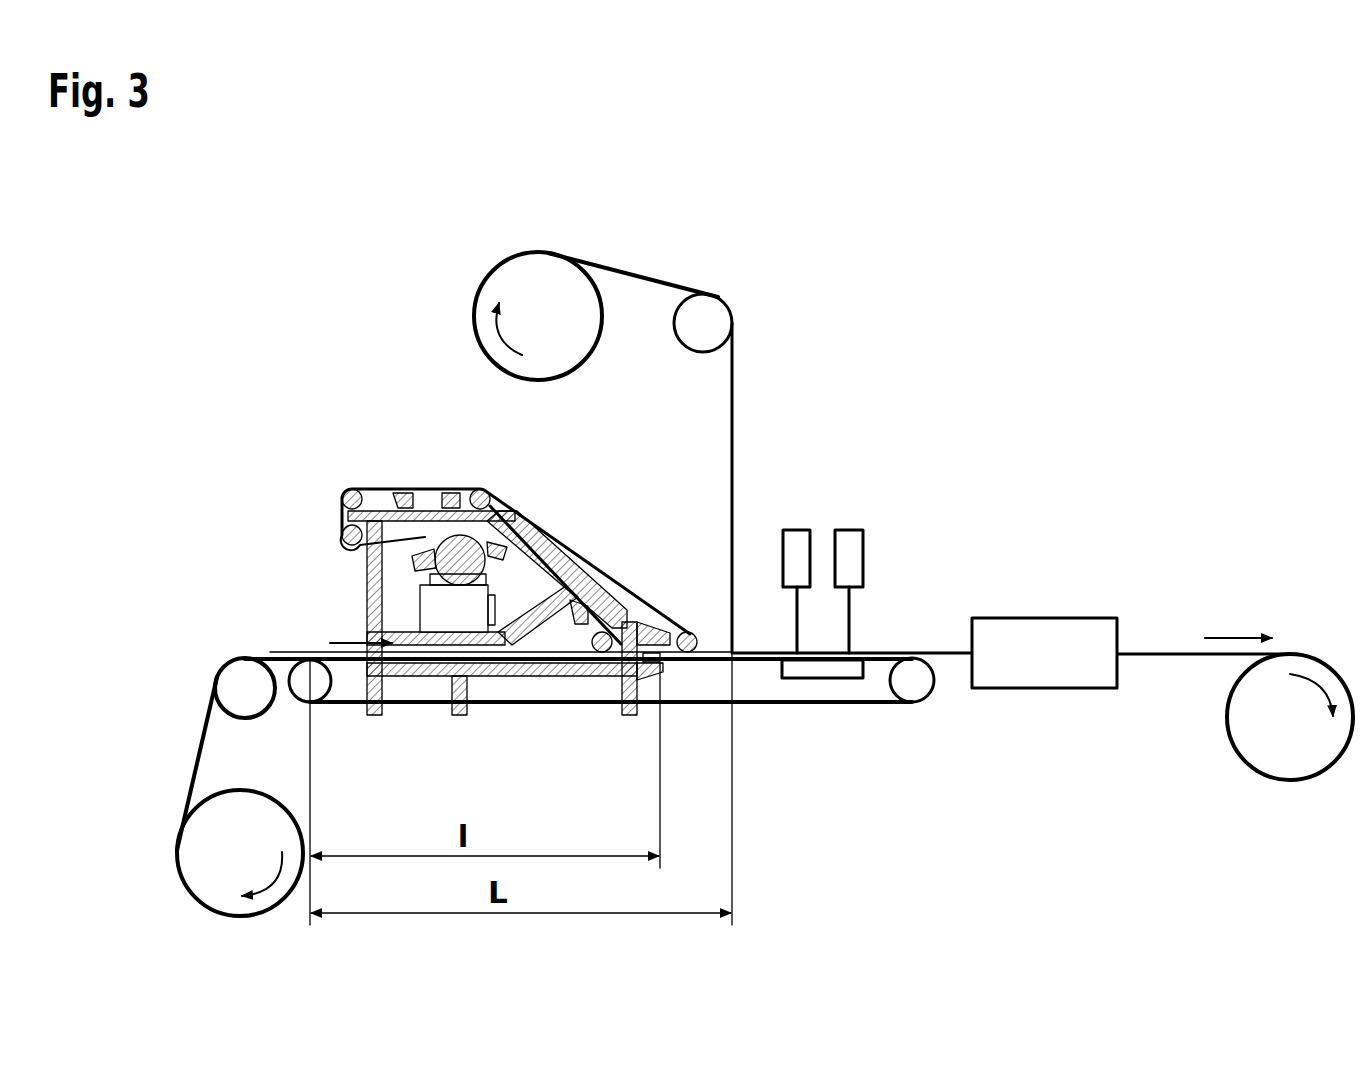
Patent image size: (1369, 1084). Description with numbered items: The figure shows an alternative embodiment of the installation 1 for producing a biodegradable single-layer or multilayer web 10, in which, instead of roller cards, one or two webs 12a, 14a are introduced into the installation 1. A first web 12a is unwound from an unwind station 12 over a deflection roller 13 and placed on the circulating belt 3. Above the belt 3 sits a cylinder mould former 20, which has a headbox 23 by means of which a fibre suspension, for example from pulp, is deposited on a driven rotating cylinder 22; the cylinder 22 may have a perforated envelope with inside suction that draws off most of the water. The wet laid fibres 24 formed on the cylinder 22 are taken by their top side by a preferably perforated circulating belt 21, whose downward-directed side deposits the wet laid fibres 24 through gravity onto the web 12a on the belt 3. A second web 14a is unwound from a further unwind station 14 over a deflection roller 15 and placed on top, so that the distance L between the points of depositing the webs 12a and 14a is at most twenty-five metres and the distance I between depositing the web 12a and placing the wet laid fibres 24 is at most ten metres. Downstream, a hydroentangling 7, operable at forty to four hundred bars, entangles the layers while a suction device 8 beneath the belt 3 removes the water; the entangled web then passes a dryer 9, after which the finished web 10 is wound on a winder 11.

The installation 1 is at (1060, 238).
The circulating belt 3 is at (497, 705).
The hydroentangling 7 is at (798, 545).
The suction device 8 is at (822, 670).
The dryer 9 is at (1045, 628).
The web 10 is at (1183, 652).
The winder 11 is at (1312, 665).
The unwind station 12 is at (185, 855).
The web 12a is at (190, 772).
The deflection roller 13 is at (232, 677).
The unwind station 14 is at (540, 268).
The web 14a is at (630, 270).
The deflection roller 15 is at (709, 315).
The cylinder mould former 20 is at (253, 462).
The circulating belt 21 is at (598, 565).
The rotating cylinder 22 is at (462, 555).
The headbox 23 is at (416, 554).
The wet laid fibres 24 is at (572, 645).